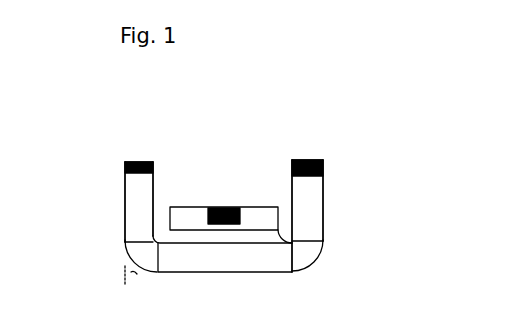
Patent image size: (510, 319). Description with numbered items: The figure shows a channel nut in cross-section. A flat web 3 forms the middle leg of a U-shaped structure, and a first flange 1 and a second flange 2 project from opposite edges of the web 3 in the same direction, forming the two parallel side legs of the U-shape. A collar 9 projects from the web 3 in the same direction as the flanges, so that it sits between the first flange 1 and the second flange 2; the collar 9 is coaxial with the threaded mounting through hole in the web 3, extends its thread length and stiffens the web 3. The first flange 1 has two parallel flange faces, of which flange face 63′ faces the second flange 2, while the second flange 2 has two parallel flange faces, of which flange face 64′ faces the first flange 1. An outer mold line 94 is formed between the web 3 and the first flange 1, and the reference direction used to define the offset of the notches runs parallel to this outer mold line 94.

The first flange 1 is at (142, 195).
The second flange 2 is at (310, 185).
The web 3 is at (225, 256).
The collar 9 is at (201, 216).
The flange face 63′ is at (157, 190).
The flange face 64′ is at (288, 190).
The outer mold line 94 is at (125, 273).